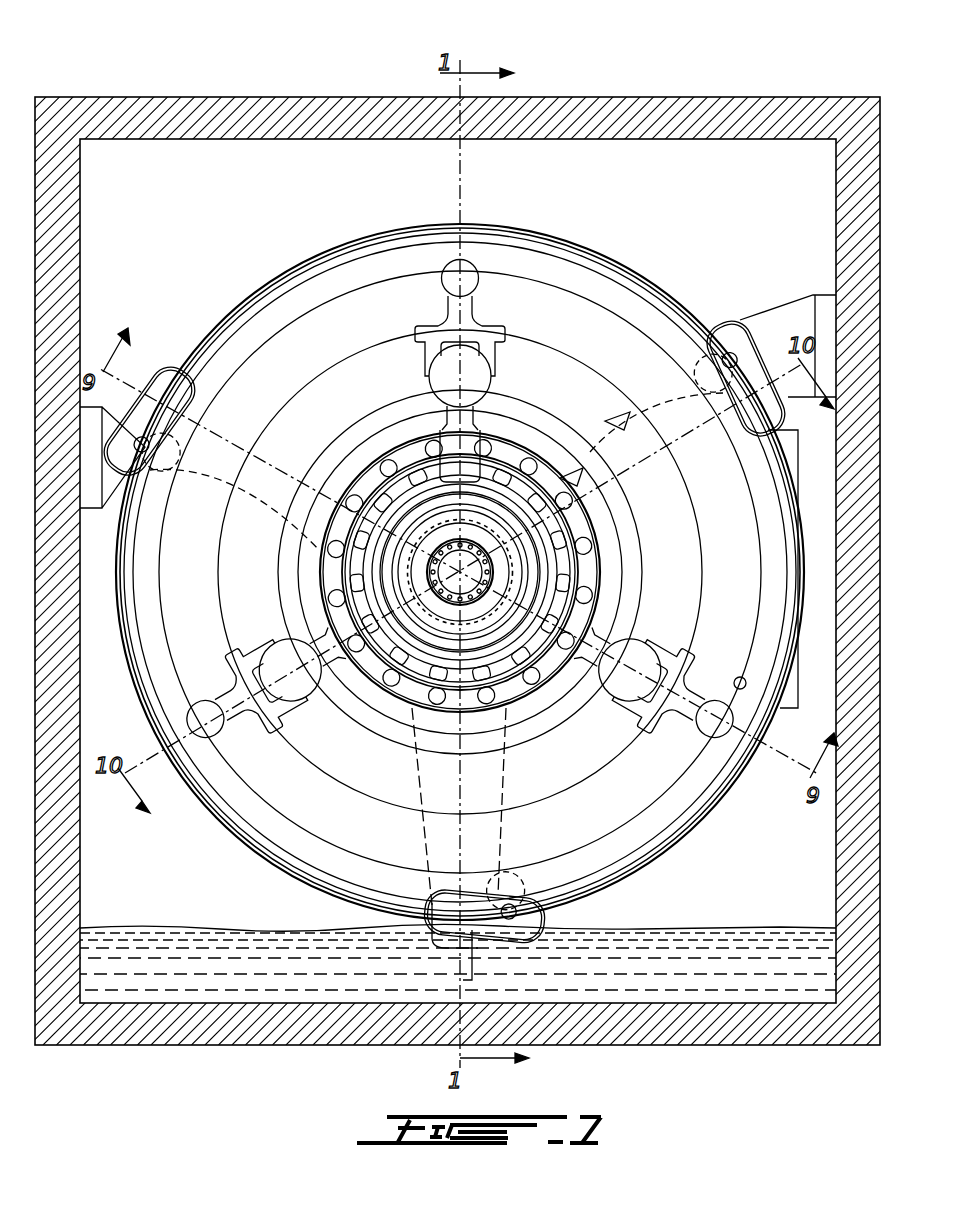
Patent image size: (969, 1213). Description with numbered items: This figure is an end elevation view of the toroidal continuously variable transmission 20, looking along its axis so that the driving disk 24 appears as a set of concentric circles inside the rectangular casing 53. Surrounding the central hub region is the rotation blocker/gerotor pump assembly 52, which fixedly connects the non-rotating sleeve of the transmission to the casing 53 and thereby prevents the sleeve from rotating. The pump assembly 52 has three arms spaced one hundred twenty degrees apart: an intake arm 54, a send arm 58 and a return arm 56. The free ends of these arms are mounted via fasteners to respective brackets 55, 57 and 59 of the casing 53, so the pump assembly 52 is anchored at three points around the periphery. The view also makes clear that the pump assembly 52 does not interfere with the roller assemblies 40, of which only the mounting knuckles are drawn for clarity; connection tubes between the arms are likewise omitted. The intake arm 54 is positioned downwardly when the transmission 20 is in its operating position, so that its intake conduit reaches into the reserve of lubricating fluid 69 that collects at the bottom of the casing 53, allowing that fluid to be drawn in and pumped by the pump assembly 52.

The toroidal continuously variable transmission 20 is at (185, 78).
The driving disk 24 is at (672, 863).
The roller assemblies 40 is at (490, 357).
The rotation blocker/gerotor pump assembly 52 is at (742, 323).
The casing 53 is at (58, 198).
The intake arm 54 is at (525, 922).
The bracket 55 is at (550, 917).
The return arm 56 is at (160, 366).
The bracket 57 is at (100, 490).
The send arm 58 is at (780, 403).
The bracket 59 is at (801, 308).
The lubricating fluid 69 is at (245, 990).